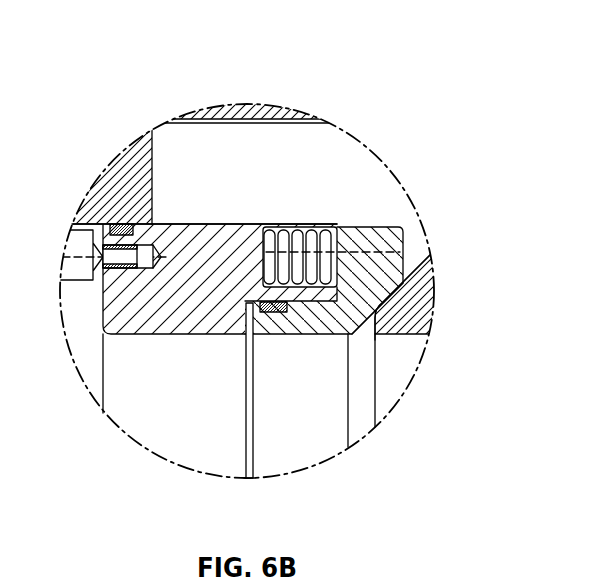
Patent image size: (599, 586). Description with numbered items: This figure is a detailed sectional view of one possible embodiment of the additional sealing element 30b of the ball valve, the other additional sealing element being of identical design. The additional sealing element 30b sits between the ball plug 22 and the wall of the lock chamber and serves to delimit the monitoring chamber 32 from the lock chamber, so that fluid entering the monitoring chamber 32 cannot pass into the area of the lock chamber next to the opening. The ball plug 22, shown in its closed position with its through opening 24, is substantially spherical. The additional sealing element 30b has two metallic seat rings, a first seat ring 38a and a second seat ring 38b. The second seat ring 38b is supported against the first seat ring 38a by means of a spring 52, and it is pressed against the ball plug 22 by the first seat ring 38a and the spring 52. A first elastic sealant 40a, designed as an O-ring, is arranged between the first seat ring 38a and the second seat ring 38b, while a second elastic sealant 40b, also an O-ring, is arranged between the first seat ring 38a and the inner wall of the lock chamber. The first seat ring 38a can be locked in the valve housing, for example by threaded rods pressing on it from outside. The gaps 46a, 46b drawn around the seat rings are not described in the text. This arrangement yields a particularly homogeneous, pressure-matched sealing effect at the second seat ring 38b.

The ball plug 22 is at (425, 317).
The through opening 24 is at (367, 181).
The additional sealing element 30b is at (200, 220).
The monitoring chamber 32 is at (305, 413).
The first seat ring 38a is at (217, 253).
The second seat ring 38b is at (367, 250).
The first elastic sealant 40a is at (268, 314).
The second elastic sealant 40b is at (118, 222).
The first gap 46a is at (353, 340).
The second gap 46b is at (250, 305).
The spring 52 is at (292, 237).